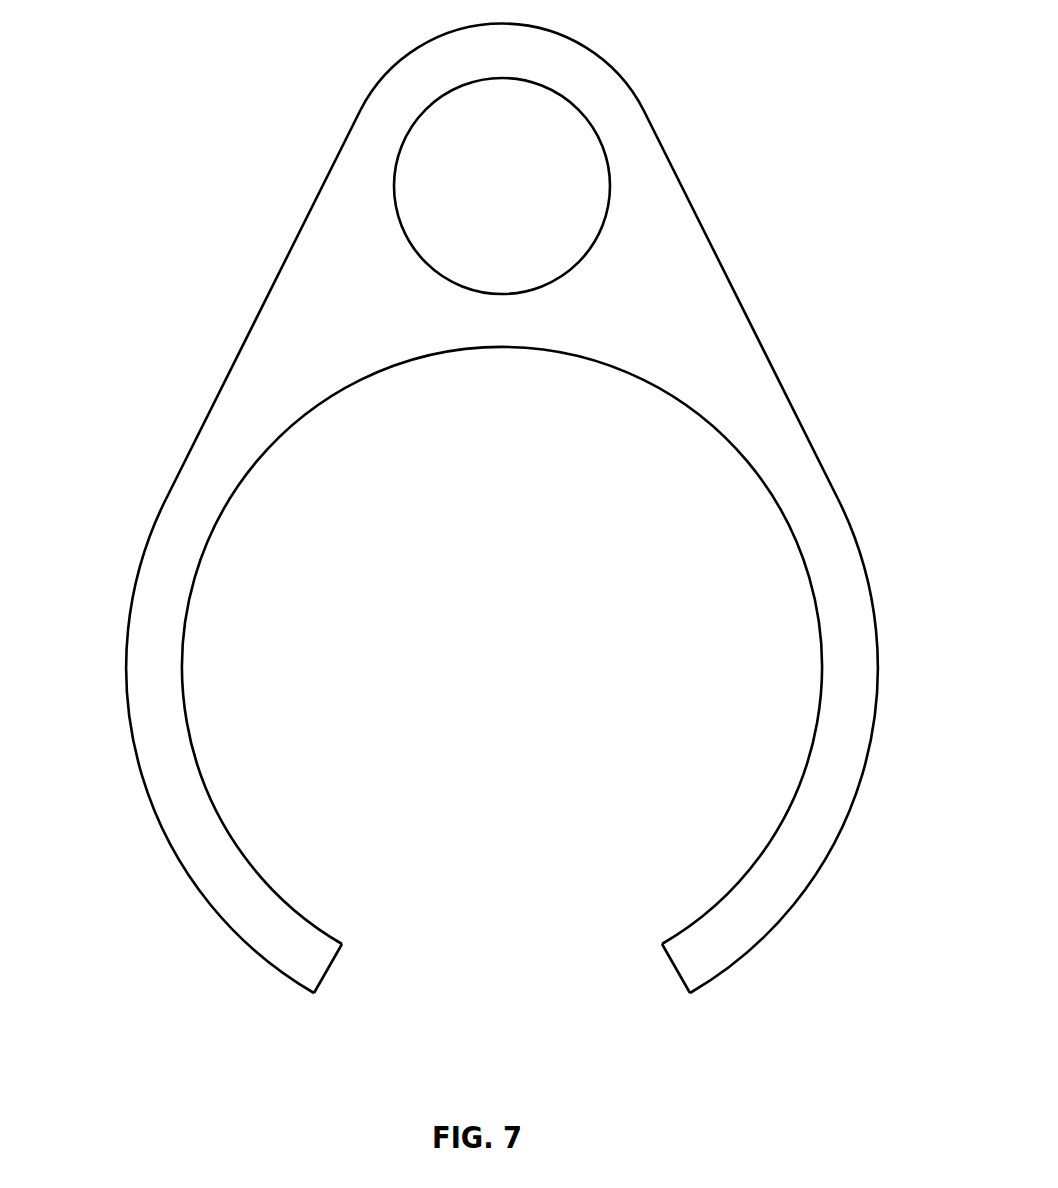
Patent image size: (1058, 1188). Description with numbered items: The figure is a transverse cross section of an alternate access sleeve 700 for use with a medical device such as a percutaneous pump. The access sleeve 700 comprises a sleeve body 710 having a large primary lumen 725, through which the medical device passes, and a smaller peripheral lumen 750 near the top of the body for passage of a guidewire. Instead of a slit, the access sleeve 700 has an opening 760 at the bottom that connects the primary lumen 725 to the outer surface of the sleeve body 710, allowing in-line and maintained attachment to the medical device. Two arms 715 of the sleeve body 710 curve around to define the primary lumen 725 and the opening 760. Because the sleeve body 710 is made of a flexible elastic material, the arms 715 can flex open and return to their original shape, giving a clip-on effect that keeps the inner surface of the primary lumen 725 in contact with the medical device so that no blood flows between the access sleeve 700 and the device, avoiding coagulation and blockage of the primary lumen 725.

The access sleeve 700 is at (499, 554).
The sleeve body 710 is at (285, 287).
The arms 715 is at (140, 643).
The primary lumen 725 is at (252, 535).
The peripheral lumen 750 is at (463, 142).
The opening 760 is at (419, 912).